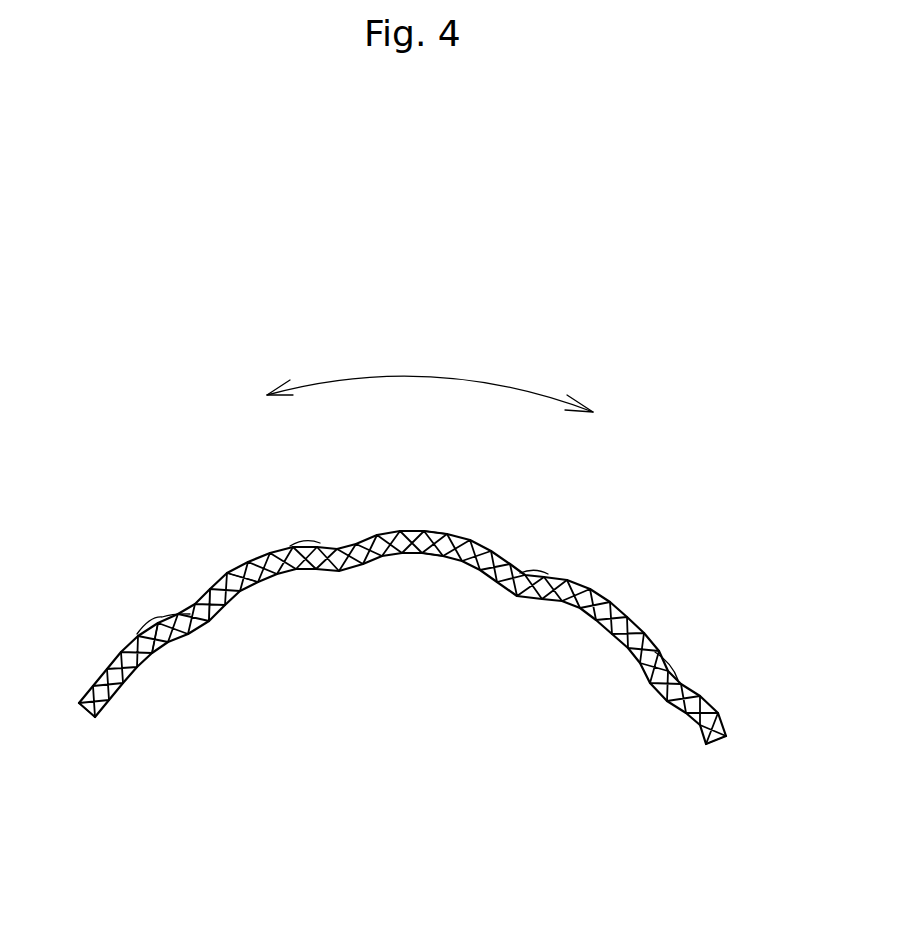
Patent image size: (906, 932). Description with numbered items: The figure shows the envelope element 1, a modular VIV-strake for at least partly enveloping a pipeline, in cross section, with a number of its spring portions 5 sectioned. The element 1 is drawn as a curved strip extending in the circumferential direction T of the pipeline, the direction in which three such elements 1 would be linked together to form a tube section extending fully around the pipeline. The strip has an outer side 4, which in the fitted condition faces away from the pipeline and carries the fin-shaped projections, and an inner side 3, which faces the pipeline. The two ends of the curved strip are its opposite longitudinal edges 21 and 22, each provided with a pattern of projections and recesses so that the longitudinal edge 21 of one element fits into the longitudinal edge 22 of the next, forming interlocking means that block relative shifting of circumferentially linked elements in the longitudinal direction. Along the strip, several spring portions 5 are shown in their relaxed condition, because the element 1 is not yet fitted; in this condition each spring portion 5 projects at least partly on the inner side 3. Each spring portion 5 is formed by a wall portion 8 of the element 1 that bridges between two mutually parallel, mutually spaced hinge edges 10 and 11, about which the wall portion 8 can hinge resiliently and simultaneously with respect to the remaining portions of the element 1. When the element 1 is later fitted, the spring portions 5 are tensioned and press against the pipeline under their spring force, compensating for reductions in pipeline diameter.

The envelope element 1 is at (158, 470).
The inner side 3 is at (447, 577).
The outer side 4 is at (453, 527).
The spring portion 5 is at (177, 583).
The wall portion 8 is at (217, 617).
The hinge edge 10 is at (150, 640).
The hinge edge 11 is at (228, 585).
The longitudinal edge 21 is at (687, 778).
The longitudinal edge 22 is at (115, 746).
The circumferential direction T is at (443, 373).